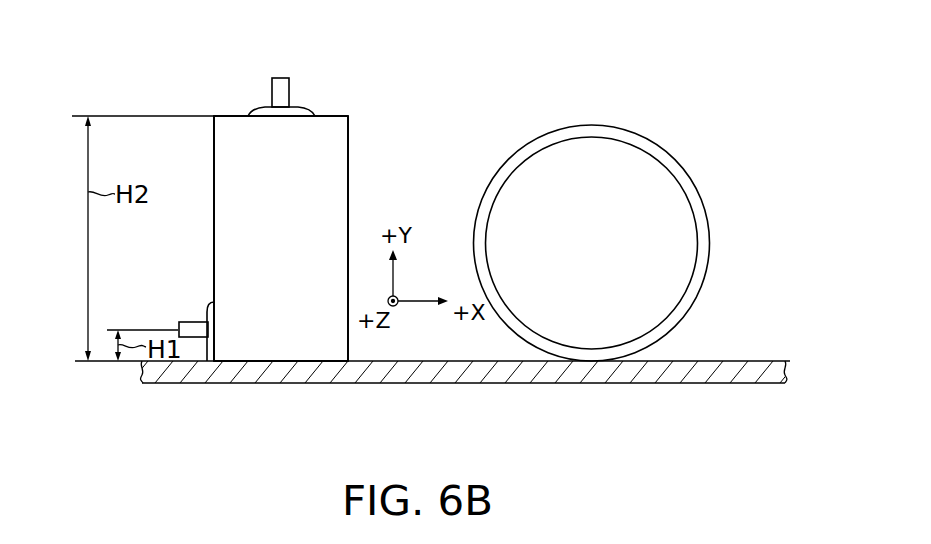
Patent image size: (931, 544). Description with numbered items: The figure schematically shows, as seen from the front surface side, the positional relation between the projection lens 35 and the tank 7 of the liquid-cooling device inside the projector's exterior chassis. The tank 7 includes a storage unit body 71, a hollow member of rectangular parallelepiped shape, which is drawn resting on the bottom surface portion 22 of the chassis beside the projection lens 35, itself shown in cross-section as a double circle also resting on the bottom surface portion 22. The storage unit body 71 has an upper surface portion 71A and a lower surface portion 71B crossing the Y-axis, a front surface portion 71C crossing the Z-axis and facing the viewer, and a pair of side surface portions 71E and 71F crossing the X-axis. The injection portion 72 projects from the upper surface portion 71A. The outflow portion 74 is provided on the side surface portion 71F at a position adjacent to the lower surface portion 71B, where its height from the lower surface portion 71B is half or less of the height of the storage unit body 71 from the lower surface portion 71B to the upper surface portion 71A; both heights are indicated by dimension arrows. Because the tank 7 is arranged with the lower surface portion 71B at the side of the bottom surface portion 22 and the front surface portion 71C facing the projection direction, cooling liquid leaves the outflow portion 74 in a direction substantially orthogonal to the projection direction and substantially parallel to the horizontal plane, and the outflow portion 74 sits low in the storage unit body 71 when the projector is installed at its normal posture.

The tank 7 is at (385, 74).
The storage unit body 71 is at (337, 143).
The upper surface portion 71A is at (228, 116).
The lower surface portion 71B is at (287, 361).
The front surface portion 71C is at (323, 341).
The side surface portion 71E is at (348, 183).
The side surface portion 71F is at (214, 155).
The injection portion 72 is at (281, 78).
The outflow portion 74 is at (202, 337).
The projection lens 35 is at (657, 148).
The bottom surface portion 22 is at (440, 383).